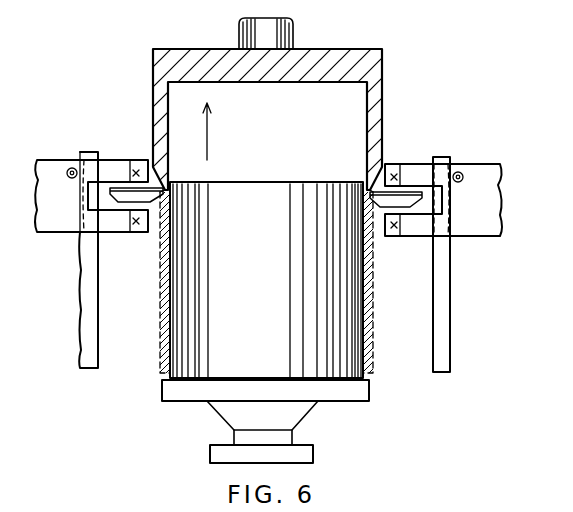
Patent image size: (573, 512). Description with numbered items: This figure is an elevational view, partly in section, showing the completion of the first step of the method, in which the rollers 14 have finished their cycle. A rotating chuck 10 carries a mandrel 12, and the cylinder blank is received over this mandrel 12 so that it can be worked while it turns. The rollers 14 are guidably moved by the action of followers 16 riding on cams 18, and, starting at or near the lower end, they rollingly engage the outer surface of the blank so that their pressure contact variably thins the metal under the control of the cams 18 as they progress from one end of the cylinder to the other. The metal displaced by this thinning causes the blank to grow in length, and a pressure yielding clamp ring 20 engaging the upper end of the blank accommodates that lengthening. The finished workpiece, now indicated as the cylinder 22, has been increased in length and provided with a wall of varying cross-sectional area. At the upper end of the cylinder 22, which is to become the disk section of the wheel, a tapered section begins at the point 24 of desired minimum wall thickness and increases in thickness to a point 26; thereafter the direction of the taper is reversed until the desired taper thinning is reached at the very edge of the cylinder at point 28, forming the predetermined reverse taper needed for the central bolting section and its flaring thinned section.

The rotating chuck 10 is at (302, 405).
The mandrel 12 is at (318, 182).
The rollers 14 is at (158, 230).
The followers 16 is at (70, 168).
The cams 18 is at (88, 291).
The pressure yielding clamp ring 20 is at (350, 60).
The cylinder 22 is at (370, 310).
The point of minimum wall thickness 24 is at (372, 250).
The point of taper reversal 26 is at (374, 218).
The edge point of taper thinning 28 is at (386, 164).